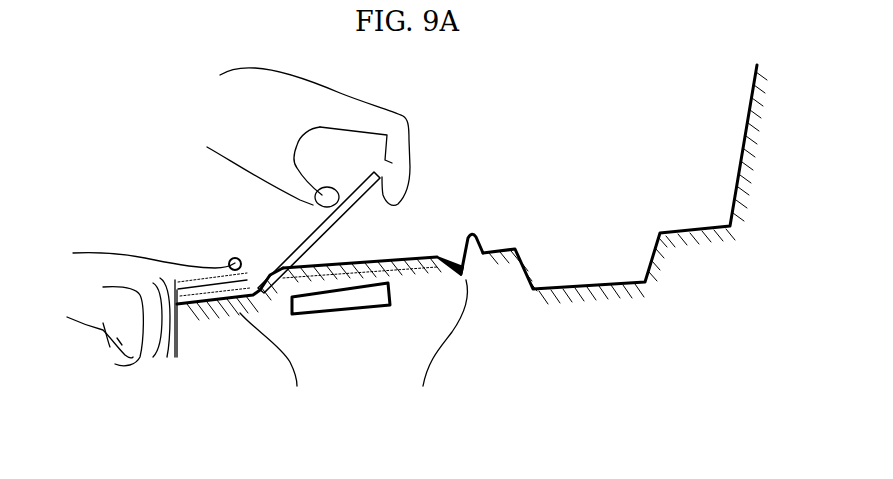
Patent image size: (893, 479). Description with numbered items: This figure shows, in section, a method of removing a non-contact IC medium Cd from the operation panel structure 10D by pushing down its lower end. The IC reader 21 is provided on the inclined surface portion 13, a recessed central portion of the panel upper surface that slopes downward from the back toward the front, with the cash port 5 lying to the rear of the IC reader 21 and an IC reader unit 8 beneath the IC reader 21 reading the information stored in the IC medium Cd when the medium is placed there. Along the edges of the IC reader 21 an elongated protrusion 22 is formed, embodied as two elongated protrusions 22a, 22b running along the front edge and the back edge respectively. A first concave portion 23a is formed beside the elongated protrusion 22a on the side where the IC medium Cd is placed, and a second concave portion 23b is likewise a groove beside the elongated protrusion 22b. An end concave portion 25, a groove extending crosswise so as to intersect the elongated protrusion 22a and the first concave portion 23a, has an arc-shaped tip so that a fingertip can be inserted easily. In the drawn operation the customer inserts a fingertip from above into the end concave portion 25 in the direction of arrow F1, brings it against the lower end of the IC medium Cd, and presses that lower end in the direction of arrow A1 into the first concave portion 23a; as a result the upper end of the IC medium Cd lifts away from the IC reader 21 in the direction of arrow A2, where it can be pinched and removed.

The operation panel structure 10D is at (467, 184).
The cash port 5 is at (590, 282).
The inclined surface portion 13 is at (499, 244).
The IC reader 21 is at (378, 227).
The first concave portion 23a is at (232, 257).
The second concave portion 23b is at (461, 246).
The end concave portion 25 is at (187, 279).
The IC reader unit 8 is at (335, 312).
The elongated protrusion 22 is at (353, 366).
The elongated protrusion 22a is at (273, 362).
The elongated protrusion 22b is at (432, 346).
The arrow F1 is at (186, 203).
The arrow A1 is at (248, 206).
The arrow A2 is at (343, 218).
The IC medium Cd is at (302, 261).